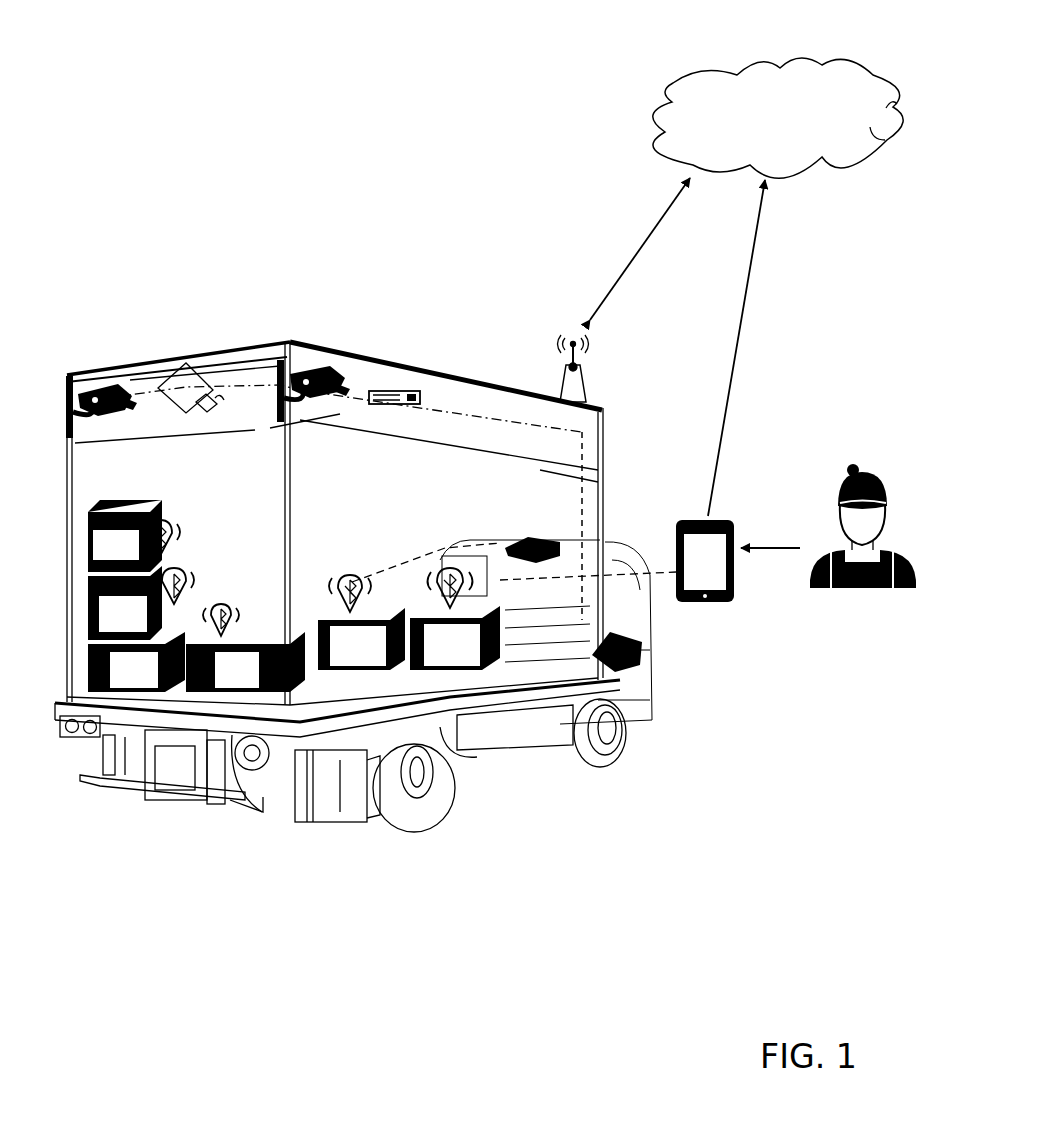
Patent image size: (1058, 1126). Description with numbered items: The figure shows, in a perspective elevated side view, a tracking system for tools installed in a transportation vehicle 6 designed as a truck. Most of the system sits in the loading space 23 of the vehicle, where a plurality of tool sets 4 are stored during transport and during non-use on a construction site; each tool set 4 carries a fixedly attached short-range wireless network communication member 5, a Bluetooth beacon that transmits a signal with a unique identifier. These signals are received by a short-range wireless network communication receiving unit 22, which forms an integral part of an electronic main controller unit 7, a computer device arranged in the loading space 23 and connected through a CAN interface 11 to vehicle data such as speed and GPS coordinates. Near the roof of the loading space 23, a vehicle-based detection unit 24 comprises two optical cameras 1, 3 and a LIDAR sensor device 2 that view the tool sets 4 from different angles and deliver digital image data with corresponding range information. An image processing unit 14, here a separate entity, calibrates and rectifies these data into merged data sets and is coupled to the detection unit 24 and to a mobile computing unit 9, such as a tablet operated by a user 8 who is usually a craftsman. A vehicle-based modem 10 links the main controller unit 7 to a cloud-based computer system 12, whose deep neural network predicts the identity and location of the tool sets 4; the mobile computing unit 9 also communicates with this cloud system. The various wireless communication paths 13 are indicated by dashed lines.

The optical camera 1 is at (101, 390).
The LIDAR sensor device 2 is at (186, 385).
The optical camera 3 is at (302, 385).
The tool set 4 is at (381, 617).
The short-range wireless network communication member 5 is at (348, 592).
The transportation vehicle 6 is at (473, 382).
The electronic main controller unit 7 is at (545, 530).
The user 8 is at (860, 592).
The mobile computing unit 9 is at (735, 605).
The vehicle-based modem 10 is at (570, 365).
The CAN interface 11 is at (630, 652).
The cloud-based computer system 12 is at (672, 82).
The wireless communication paths 13 is at (582, 432).
The image processing unit 14 is at (394, 392).
The short-range wireless network communication receiving unit 22 is at (560, 540).
The loading space 23 is at (214, 489).
The vehicle-based detection unit 24 is at (233, 306).